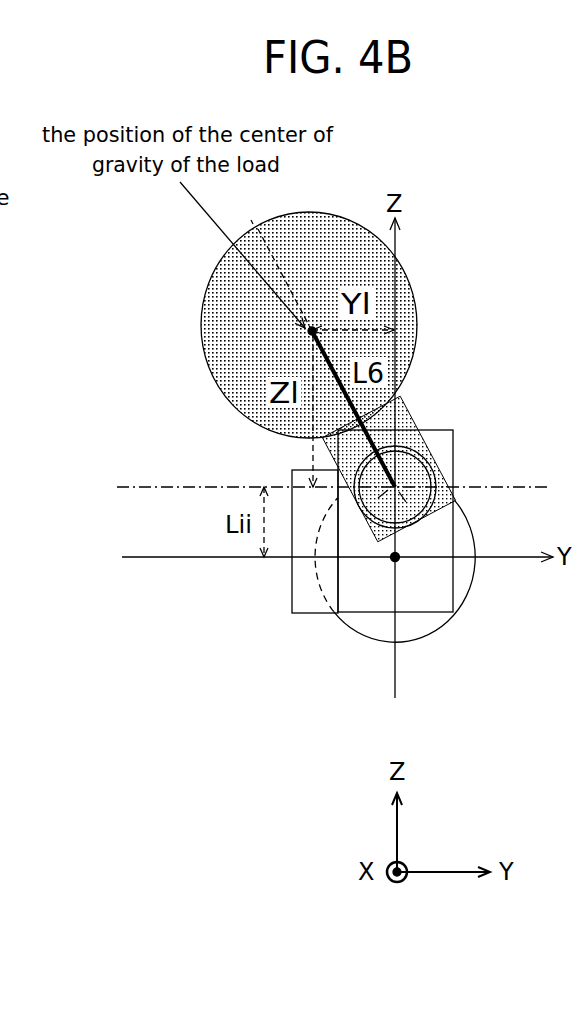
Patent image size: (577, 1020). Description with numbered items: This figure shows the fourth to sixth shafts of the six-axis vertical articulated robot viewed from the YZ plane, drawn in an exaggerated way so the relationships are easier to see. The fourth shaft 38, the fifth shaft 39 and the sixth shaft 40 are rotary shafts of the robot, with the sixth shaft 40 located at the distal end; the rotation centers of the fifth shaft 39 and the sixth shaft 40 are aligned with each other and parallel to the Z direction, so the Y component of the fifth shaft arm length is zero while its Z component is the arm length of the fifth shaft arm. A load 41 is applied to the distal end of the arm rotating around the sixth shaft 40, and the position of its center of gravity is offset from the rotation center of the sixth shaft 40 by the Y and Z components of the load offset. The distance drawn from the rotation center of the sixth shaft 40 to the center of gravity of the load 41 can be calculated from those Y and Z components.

The fourth shaft 38 is at (468, 568).
The fifth shaft 39 is at (388, 563).
The sixth shaft 40 is at (380, 497).
The load 41 is at (412, 268).